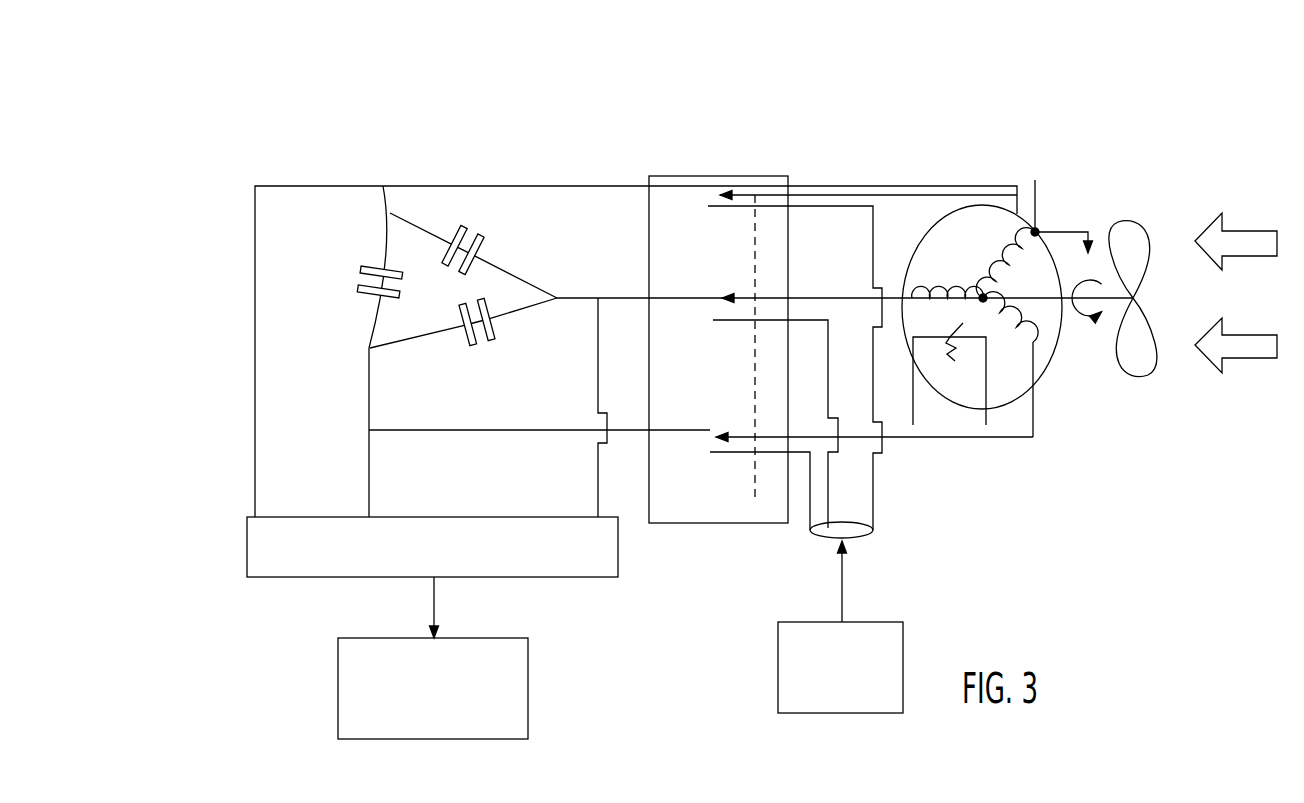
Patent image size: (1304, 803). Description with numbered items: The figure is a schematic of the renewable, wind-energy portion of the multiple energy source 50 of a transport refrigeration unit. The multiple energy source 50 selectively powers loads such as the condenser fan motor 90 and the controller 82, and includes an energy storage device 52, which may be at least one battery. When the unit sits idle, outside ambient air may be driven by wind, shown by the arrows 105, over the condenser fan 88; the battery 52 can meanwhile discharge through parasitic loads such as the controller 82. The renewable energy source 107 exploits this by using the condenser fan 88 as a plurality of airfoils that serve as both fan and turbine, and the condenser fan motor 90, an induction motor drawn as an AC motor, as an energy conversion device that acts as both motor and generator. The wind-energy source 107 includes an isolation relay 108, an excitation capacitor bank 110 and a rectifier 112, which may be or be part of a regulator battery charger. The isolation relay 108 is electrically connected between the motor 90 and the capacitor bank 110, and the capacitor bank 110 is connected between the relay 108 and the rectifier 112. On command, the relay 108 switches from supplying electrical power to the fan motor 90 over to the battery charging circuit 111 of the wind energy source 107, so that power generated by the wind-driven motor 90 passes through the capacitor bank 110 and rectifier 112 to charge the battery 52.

The multiple energy source 50 is at (1080, 72).
The energy storage device 52 is at (447, 694).
The controller 82 is at (854, 682).
The condenser fan 88 is at (1157, 232).
The condenser fan motor 90 is at (1040, 377).
The arrows 105 is at (1257, 232).
The renewable energy source 107 is at (148, 210).
The isolation relay 108 is at (737, 176).
The excitation capacitor bank 110 is at (507, 243).
The battery charging circuit 111 is at (653, 167).
The rectifier 112 is at (618, 555).